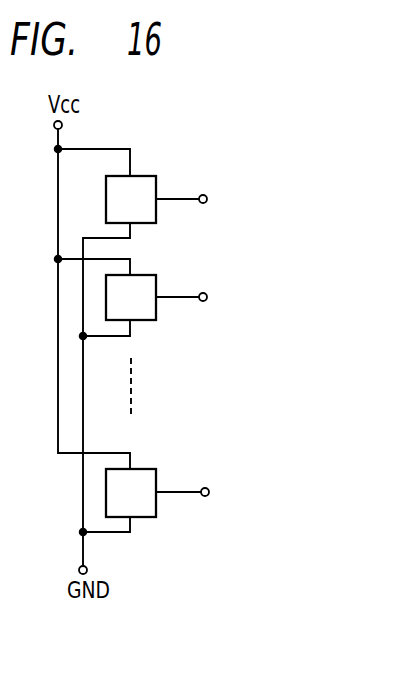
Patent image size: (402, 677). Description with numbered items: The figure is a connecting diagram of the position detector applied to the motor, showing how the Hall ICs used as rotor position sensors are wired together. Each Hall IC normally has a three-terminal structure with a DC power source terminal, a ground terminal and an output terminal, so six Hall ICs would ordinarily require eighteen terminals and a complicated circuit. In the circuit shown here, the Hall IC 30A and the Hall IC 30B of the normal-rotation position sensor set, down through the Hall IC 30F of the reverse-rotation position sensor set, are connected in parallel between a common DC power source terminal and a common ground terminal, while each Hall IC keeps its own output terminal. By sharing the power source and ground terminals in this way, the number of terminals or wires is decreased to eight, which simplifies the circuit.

The Hall IC 30A is at (150, 176).
The Hall IC 30B is at (156, 283).
The Hall IC 30F is at (153, 518).